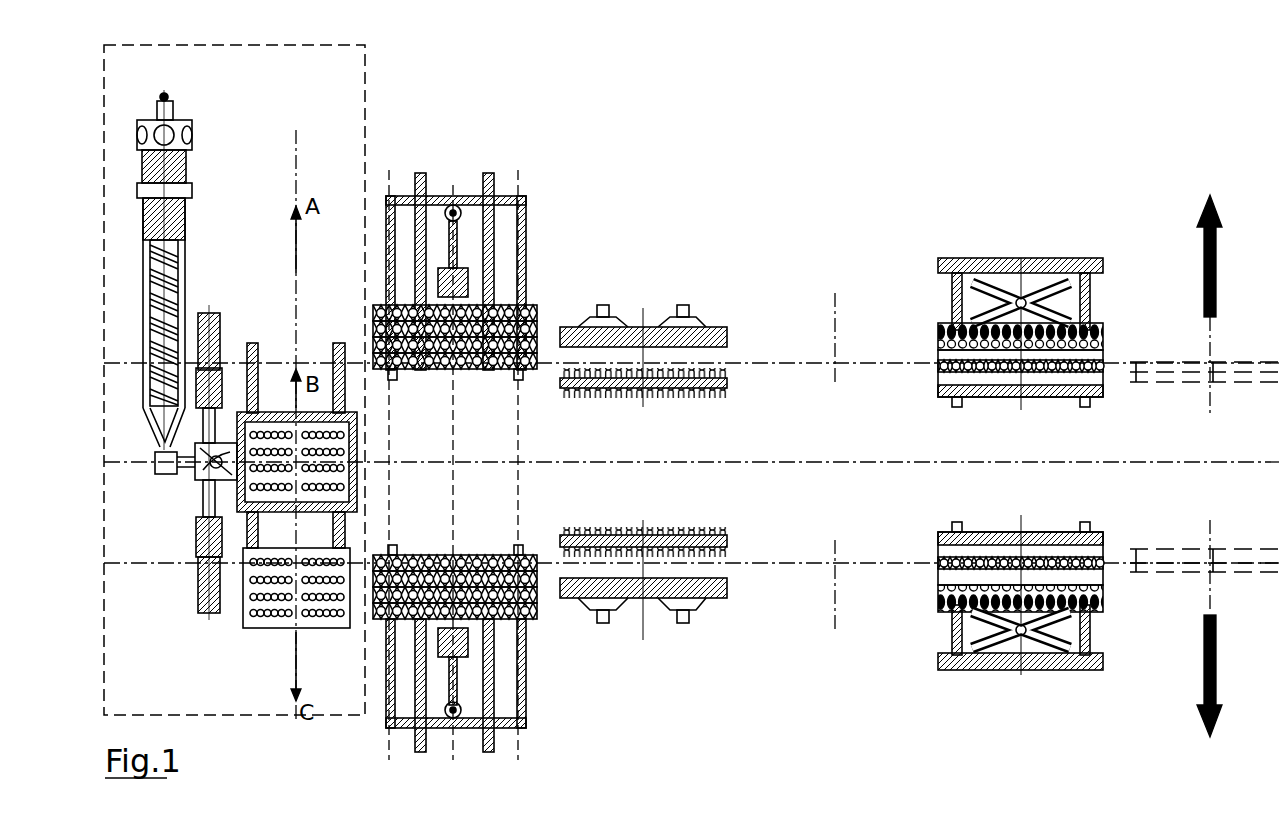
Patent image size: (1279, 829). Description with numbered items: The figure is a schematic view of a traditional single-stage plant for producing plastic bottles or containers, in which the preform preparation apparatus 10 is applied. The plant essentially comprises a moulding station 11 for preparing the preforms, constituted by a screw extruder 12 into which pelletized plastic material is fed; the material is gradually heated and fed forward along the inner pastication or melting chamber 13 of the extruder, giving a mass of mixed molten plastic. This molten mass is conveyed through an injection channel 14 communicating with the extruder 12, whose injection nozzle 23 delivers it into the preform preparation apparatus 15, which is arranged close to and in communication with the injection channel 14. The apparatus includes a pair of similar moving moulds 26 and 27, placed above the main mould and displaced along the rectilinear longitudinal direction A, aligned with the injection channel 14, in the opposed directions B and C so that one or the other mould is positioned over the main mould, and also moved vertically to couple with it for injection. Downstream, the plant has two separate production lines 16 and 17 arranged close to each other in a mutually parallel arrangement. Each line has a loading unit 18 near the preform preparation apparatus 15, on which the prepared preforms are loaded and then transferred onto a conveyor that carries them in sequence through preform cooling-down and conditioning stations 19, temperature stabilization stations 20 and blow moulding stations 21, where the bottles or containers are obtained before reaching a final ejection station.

The preform preparation apparatus 10 is at (275, 644).
The moulding station 11 is at (328, 110).
The screw extruder 12 is at (172, 215).
The inner pastication or melting chamber 13 is at (180, 293).
The injection channel 14 is at (212, 390).
The preform preparation apparatus 15 is at (328, 644).
The production line 16 is at (866, 340).
The production line 17 is at (873, 585).
The loading unit 18 is at (520, 225).
The preform cooling-down and conditioning station 19 is at (643, 472).
The temperature stabilization station 20 is at (691, 445).
The blow moulding station 21 is at (1021, 466).
The injection nozzle 23 is at (192, 470).
The moving mould 26 is at (355, 490).
The moving mould 27 is at (257, 624).